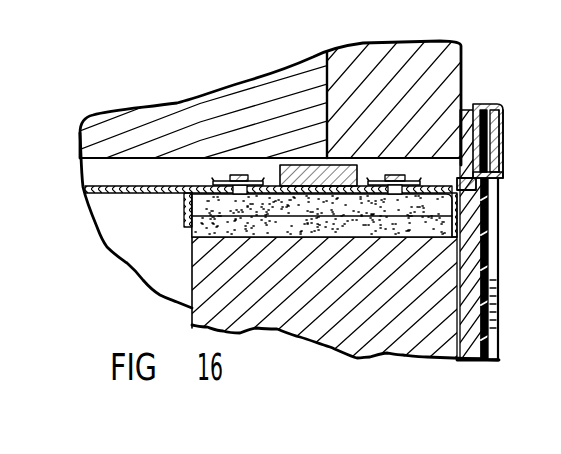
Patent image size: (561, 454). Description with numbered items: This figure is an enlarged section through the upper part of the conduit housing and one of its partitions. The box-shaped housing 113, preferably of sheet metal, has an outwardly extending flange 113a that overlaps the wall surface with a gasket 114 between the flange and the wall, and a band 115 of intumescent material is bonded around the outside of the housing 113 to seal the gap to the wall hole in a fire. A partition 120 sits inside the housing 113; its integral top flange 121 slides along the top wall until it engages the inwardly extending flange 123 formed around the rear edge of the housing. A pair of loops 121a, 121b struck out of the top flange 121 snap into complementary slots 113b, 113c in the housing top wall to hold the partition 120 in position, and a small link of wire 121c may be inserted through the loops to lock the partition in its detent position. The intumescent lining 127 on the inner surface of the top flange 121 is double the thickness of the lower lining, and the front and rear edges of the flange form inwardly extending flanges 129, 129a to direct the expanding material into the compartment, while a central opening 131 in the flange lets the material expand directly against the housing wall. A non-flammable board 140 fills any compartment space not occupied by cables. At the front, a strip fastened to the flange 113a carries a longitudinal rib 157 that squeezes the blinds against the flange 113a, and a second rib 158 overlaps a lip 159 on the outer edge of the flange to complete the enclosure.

The housing 113 is at (442, 177).
The outwardly extending flange 113a is at (503, 141).
The slot 113b is at (457, 264).
The slot 113c is at (192, 252).
The gasket 114 is at (500, 127).
The band of intumescent material 115 is at (310, 165).
The partition 120 is at (195, 283).
The top flange 121 is at (277, 114).
The loop 121a is at (402, 176).
The loop 121b is at (241, 176).
The link of wire 121c is at (258, 181).
The inwardly extending flange 123 is at (182, 195).
The intumescent lining 127 is at (340, 238).
The inwardly extending flange 129 is at (490, 218).
The inwardly extending flange 129a is at (185, 224).
The central opening 131 is at (313, 196).
The non-flammable board 140 is at (403, 337).
The longitudinal rib 157 is at (500, 152).
The second rib 158 is at (499, 105).
The lip 159 is at (482, 108).